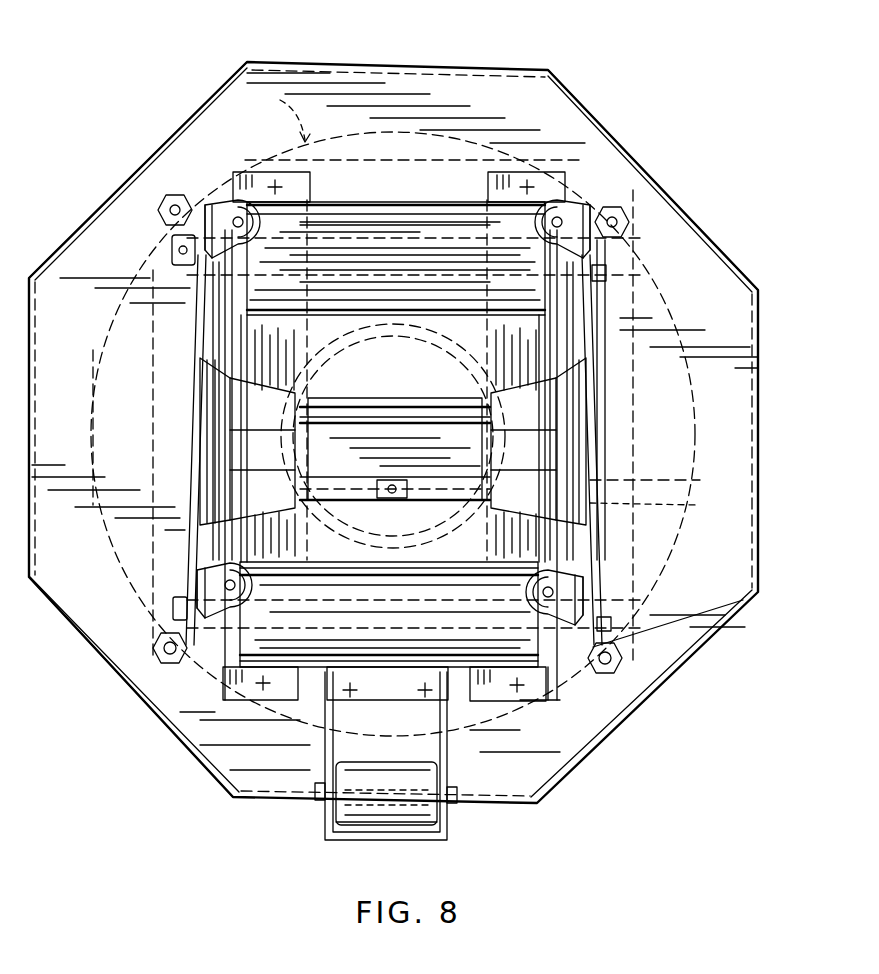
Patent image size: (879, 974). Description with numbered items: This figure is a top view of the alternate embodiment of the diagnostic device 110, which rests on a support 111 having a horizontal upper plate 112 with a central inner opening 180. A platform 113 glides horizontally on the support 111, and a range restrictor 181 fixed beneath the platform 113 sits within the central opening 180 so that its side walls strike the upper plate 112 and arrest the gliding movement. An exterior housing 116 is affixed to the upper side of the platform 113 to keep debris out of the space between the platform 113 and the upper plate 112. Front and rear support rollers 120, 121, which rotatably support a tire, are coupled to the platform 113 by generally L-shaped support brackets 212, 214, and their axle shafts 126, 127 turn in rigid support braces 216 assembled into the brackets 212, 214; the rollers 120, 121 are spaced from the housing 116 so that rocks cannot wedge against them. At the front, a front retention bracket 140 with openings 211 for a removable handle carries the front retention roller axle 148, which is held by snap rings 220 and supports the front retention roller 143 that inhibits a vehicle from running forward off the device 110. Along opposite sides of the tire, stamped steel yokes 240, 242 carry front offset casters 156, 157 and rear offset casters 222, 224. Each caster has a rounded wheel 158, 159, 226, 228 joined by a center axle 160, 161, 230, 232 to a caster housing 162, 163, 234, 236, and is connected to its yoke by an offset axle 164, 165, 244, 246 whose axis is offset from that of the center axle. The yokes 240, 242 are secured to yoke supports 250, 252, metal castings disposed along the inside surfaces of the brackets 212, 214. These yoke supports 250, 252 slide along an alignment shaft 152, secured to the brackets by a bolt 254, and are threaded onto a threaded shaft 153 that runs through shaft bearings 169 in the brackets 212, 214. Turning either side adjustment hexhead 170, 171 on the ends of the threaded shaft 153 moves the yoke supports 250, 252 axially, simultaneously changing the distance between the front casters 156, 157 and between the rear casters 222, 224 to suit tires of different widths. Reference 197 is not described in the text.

The diagnostic device 110 is at (612, 30).
The support 111 is at (311, 92).
The horizontal upper surface or plate 112 is at (292, 128).
The platform 113 is at (598, 114).
The exterior housing 116 is at (531, 68).
The front support roller 120 is at (470, 670).
The rear support roller 121 is at (325, 230).
The axle shaft 126 is at (190, 690).
The axle shaft 127 is at (190, 310).
The front retention bracket 140 is at (456, 817).
The front retention roller 143 is at (374, 825).
The front retention roller axle 148 is at (425, 835).
The alignment shaft 152 is at (390, 400).
The threaded shaft 153 is at (420, 480).
The front offset caster 156 is at (613, 590).
The front offset caster 157 is at (190, 593).
The wheel 158 is at (565, 565).
The wheel 159 is at (222, 566).
The center axle 160 is at (565, 582).
The center axle 161 is at (220, 583).
The caster housing 162 is at (620, 653).
The caster housing 163 is at (215, 597).
The offset axle 164 is at (568, 603).
The offset axle 165 is at (175, 612).
The shaft bearing 169 is at (664, 506).
The side adjustment hexhead 170 is at (665, 480).
The side adjustment hexhead 171 is at (185, 460).
The central inner opening 180 is at (385, 240).
The range restrictor 181 is at (445, 242).
The nut 197 is at (628, 220).
The opening 211 is at (460, 800).
The support bracket 212 is at (556, 702).
The support bracket 214 is at (182, 712).
The rigid support brace 216 is at (575, 682).
The snap ring 220 is at (319, 802).
The rear offset caster 222 is at (592, 205).
The rear offset caster 224 is at (222, 200).
The wheel 226 is at (573, 200).
The wheel 228 is at (226, 200).
The center axle 230 is at (578, 212).
The center axle 232 is at (233, 197).
The caster housing 234 is at (605, 240).
The caster housing 236 is at (220, 233).
The yoke 240 is at (590, 320).
The yoke 242 is at (192, 322).
The offset axle 244 is at (605, 258).
The offset axle 246 is at (180, 250).
The yoke support 250 is at (590, 440).
The yoke support 252 is at (197, 425).
The bolt 254 is at (197, 400).